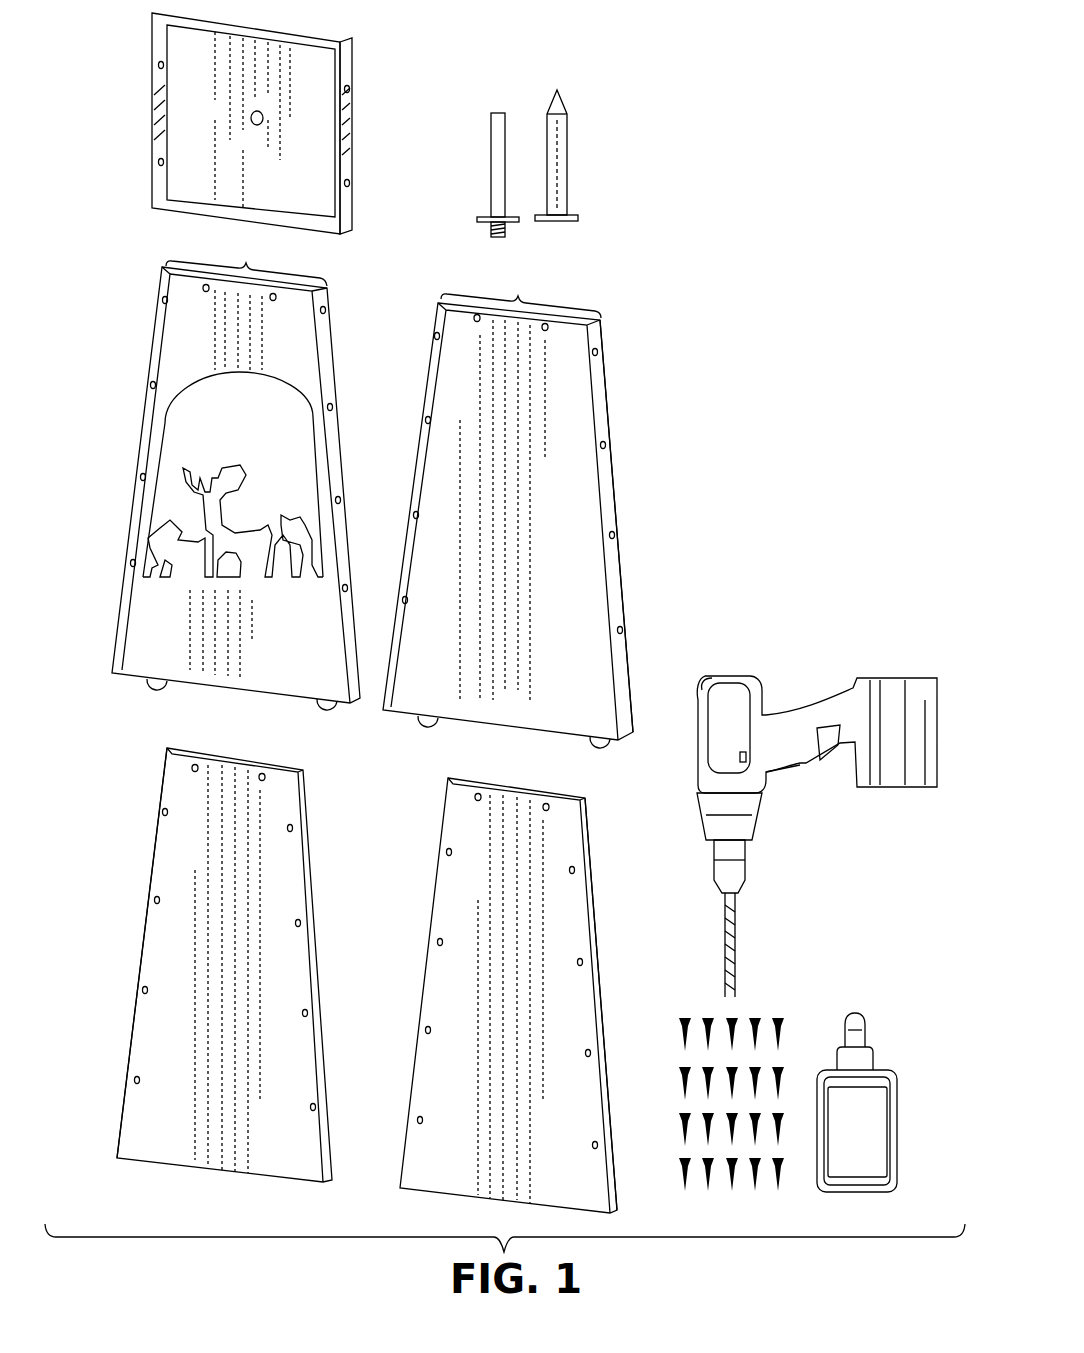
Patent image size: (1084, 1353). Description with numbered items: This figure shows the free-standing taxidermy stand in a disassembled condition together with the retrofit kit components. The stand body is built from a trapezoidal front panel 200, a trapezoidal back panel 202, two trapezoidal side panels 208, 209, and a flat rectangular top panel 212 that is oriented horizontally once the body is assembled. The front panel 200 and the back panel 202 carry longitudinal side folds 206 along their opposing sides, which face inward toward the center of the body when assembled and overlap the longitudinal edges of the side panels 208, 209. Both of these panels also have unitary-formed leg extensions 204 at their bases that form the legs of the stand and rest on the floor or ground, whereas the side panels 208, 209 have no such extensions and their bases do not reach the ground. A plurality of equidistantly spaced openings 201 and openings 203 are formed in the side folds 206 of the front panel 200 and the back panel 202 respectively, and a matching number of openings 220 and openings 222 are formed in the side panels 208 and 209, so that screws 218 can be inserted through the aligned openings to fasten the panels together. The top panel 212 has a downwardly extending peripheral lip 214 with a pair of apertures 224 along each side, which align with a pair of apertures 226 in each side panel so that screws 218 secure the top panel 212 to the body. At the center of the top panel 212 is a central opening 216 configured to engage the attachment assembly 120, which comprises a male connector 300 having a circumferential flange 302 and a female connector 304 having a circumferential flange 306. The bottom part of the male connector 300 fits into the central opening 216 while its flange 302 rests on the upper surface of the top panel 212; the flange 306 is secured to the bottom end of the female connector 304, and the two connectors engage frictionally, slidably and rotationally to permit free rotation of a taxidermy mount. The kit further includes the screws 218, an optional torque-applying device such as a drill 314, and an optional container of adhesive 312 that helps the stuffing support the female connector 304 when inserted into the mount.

The attachment assembly 120 is at (594, 97).
The front panel 200 is at (335, 511).
The openings 201 is at (151, 398).
The back panel 202 is at (546, 521).
The openings 203 is at (617, 535).
The leg extensions 204 is at (150, 690).
The side folds 206 is at (383, 274).
The side panel 208 is at (198, 965).
The side panel 209 is at (516, 995).
The top panel 212 is at (255, 123).
The peripheral lip 214 is at (352, 52).
The central opening 216 is at (250, 120).
The screws 218 is at (752, 1010).
The openings 220 is at (153, 897).
The openings 222 is at (590, 1052).
The apertures 224 is at (157, 162).
The apertures 226 is at (191, 768).
The male connector 300 is at (450, 175).
The male connector flange 302 is at (477, 219).
The female connector 304 is at (605, 172).
The female connector flange 306 is at (578, 218).
The adhesive 312 is at (890, 1060).
The drill 314 is at (738, 905).